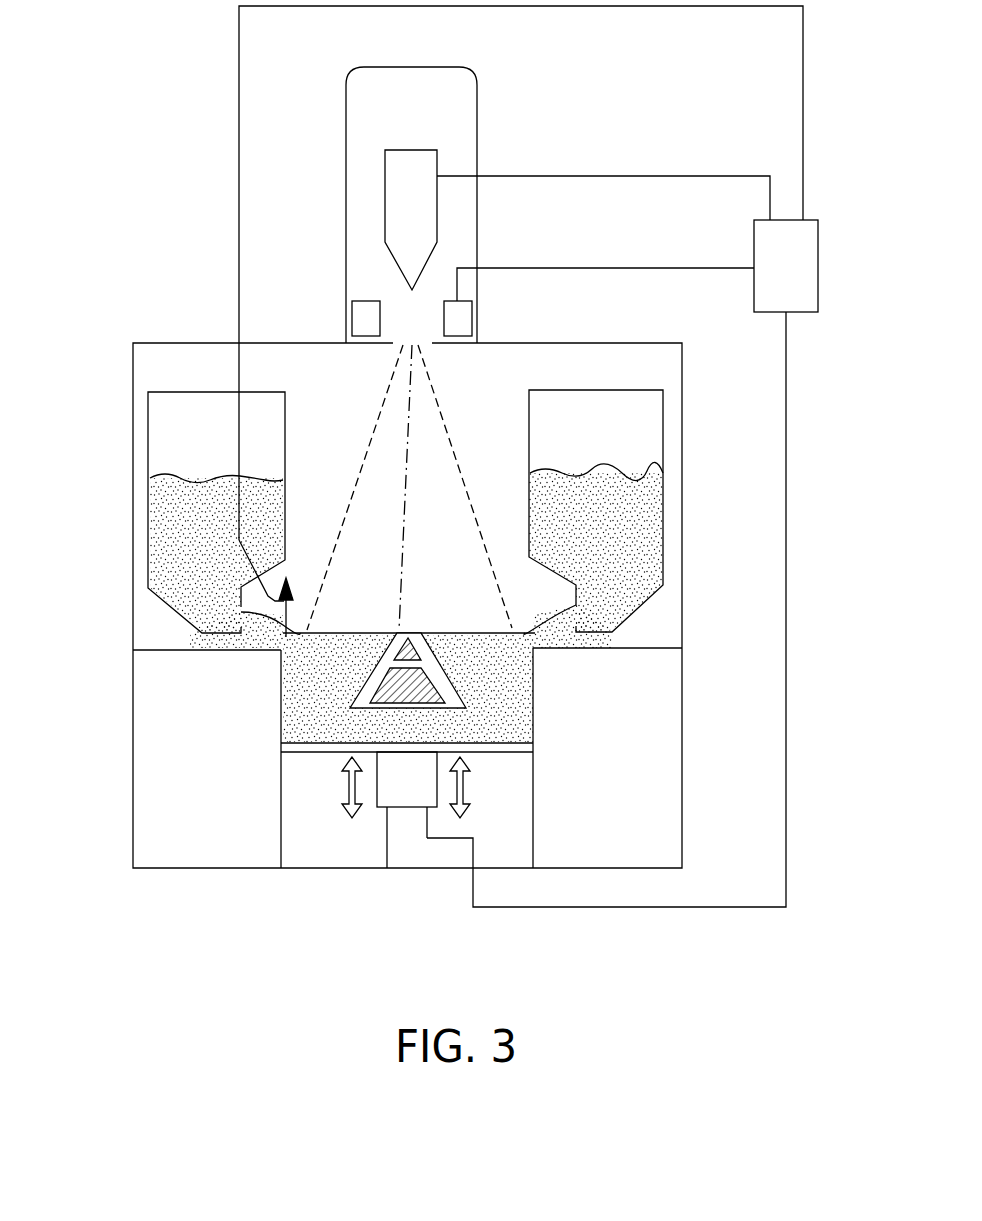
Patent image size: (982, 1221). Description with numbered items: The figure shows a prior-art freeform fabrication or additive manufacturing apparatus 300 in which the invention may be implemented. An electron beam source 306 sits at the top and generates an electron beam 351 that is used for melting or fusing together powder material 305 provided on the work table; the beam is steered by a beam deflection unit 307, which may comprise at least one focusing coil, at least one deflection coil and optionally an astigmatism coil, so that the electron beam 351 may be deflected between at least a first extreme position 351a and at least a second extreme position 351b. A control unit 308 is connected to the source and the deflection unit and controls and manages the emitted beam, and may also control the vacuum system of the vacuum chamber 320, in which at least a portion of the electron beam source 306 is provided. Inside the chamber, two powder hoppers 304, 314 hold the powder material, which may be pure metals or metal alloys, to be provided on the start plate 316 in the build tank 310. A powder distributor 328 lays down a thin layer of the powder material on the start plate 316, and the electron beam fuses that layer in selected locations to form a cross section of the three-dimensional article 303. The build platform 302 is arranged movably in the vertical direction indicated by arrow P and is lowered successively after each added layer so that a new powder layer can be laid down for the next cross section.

The additive manufacturing apparatus 300 is at (118, 227).
The build platform 302 is at (330, 757).
The three-dimensional article 303 is at (283, 683).
The powder hopper 304 is at (205, 532).
The powder material 305 is at (535, 665).
The electron beam source 306 is at (397, 213).
The beam deflection unit 307 is at (352, 326).
The control unit 308 is at (622, 541).
The build tank 310 is at (280, 805).
The powder hopper 314 is at (620, 530).
The start plate 316 is at (535, 703).
The vacuum chamber 320 is at (682, 812).
The powder distributor 328 is at (290, 612).
The electron beam 351 is at (405, 490).
The first extreme position 351a is at (310, 632).
The second extreme position 351b is at (512, 630).